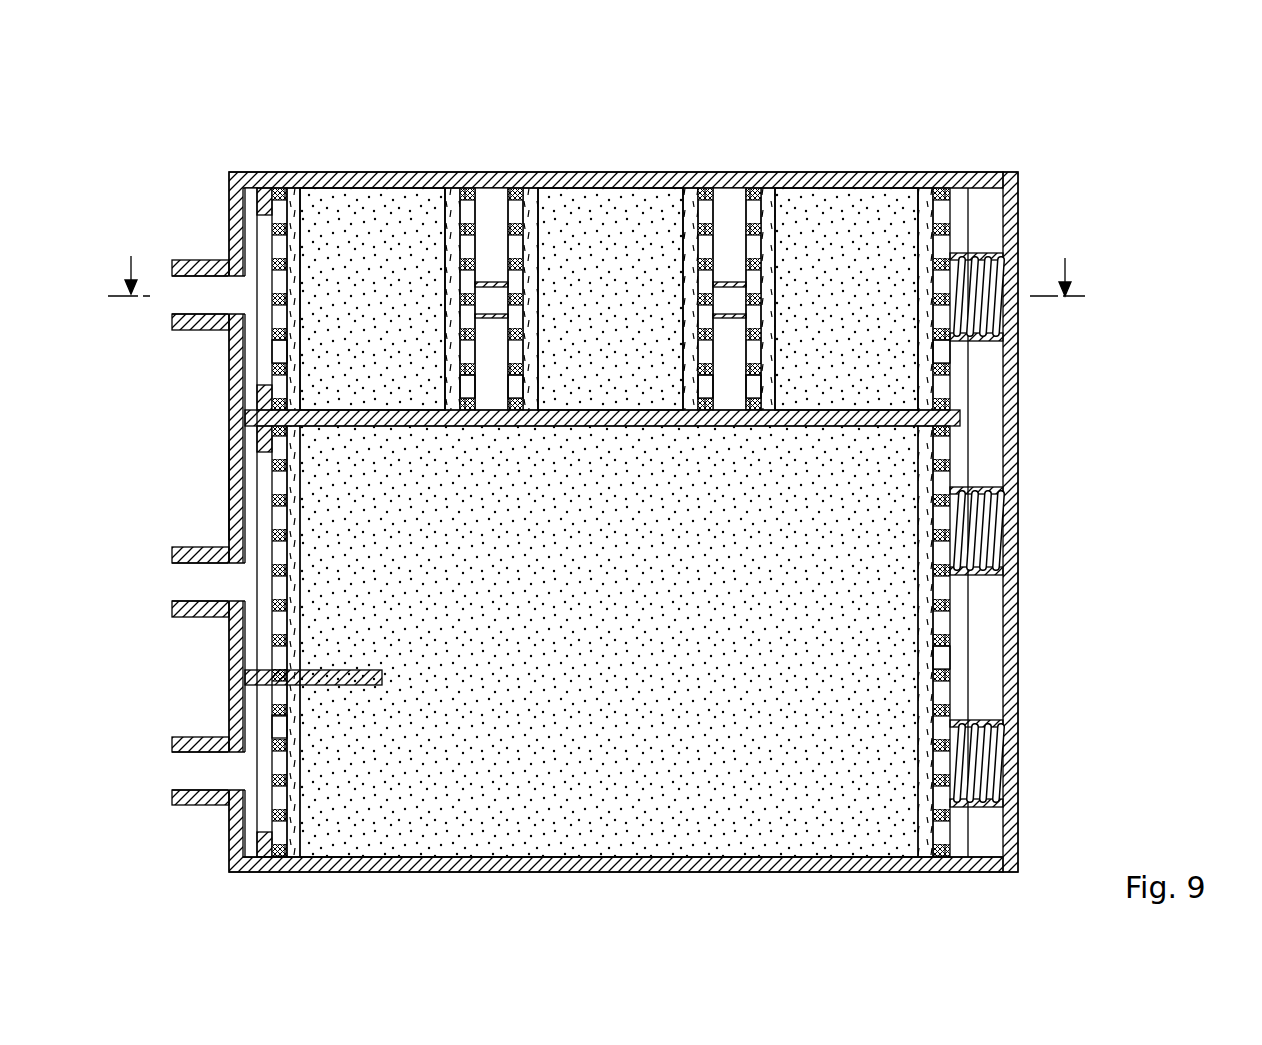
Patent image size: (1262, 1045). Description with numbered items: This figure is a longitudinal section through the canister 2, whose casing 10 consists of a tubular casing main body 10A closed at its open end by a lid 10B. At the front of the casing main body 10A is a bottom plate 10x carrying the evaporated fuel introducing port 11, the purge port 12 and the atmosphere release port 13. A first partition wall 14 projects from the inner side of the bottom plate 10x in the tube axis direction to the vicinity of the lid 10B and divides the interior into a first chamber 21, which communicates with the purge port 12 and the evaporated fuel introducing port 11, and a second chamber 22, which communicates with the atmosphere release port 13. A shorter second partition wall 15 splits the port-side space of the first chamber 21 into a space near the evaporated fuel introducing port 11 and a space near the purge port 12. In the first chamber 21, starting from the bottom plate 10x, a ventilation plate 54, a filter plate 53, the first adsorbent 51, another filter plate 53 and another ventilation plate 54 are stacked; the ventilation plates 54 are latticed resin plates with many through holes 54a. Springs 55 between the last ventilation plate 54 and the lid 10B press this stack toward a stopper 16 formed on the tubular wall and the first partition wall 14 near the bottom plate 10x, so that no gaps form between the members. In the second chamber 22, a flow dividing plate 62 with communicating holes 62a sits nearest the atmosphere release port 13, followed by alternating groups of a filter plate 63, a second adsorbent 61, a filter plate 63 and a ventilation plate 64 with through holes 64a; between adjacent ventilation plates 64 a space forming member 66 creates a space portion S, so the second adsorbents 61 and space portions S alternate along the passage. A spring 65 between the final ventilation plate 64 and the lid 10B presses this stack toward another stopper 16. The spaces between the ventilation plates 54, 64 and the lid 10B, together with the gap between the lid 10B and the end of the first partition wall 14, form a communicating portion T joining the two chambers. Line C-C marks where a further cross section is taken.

The canister 2 is at (885, 94).
The casing 10 is at (637, 475).
The casing main body 10A is at (946, 178).
The lid 10B is at (1014, 497).
The bottom plate 10x is at (232, 492).
The evaporated fuel introducing port 11 is at (190, 806).
The purge port 12 is at (190, 620).
The atmosphere release port 13 is at (185, 260).
The first partition wall 14 is at (612, 428).
The second partition wall 15 is at (370, 688).
The stopper 16 is at (245, 413).
The first chamber 21 is at (609, 641).
The second chamber 22 is at (609, 299).
The first adsorbent 51 is at (612, 862).
The filter plate 53 is at (298, 848).
The ventilation plate 54 is at (272, 710).
The through holes 54a is at (272, 735).
The springs 55 is at (985, 575).
The second adsorbent 61 is at (380, 190).
The flow dividing plate 62 is at (272, 372).
The communicating holes 62a is at (272, 345).
The filter plate 63 is at (311, 185).
The ventilation plate 64 is at (462, 385).
The through holes 64a is at (460, 398).
The spring 65 is at (990, 340).
The space forming member 66 is at (492, 320).
The space portions S is at (490, 195).
The communicating portion T is at (985, 436).
The line C- C is at (596, 262).